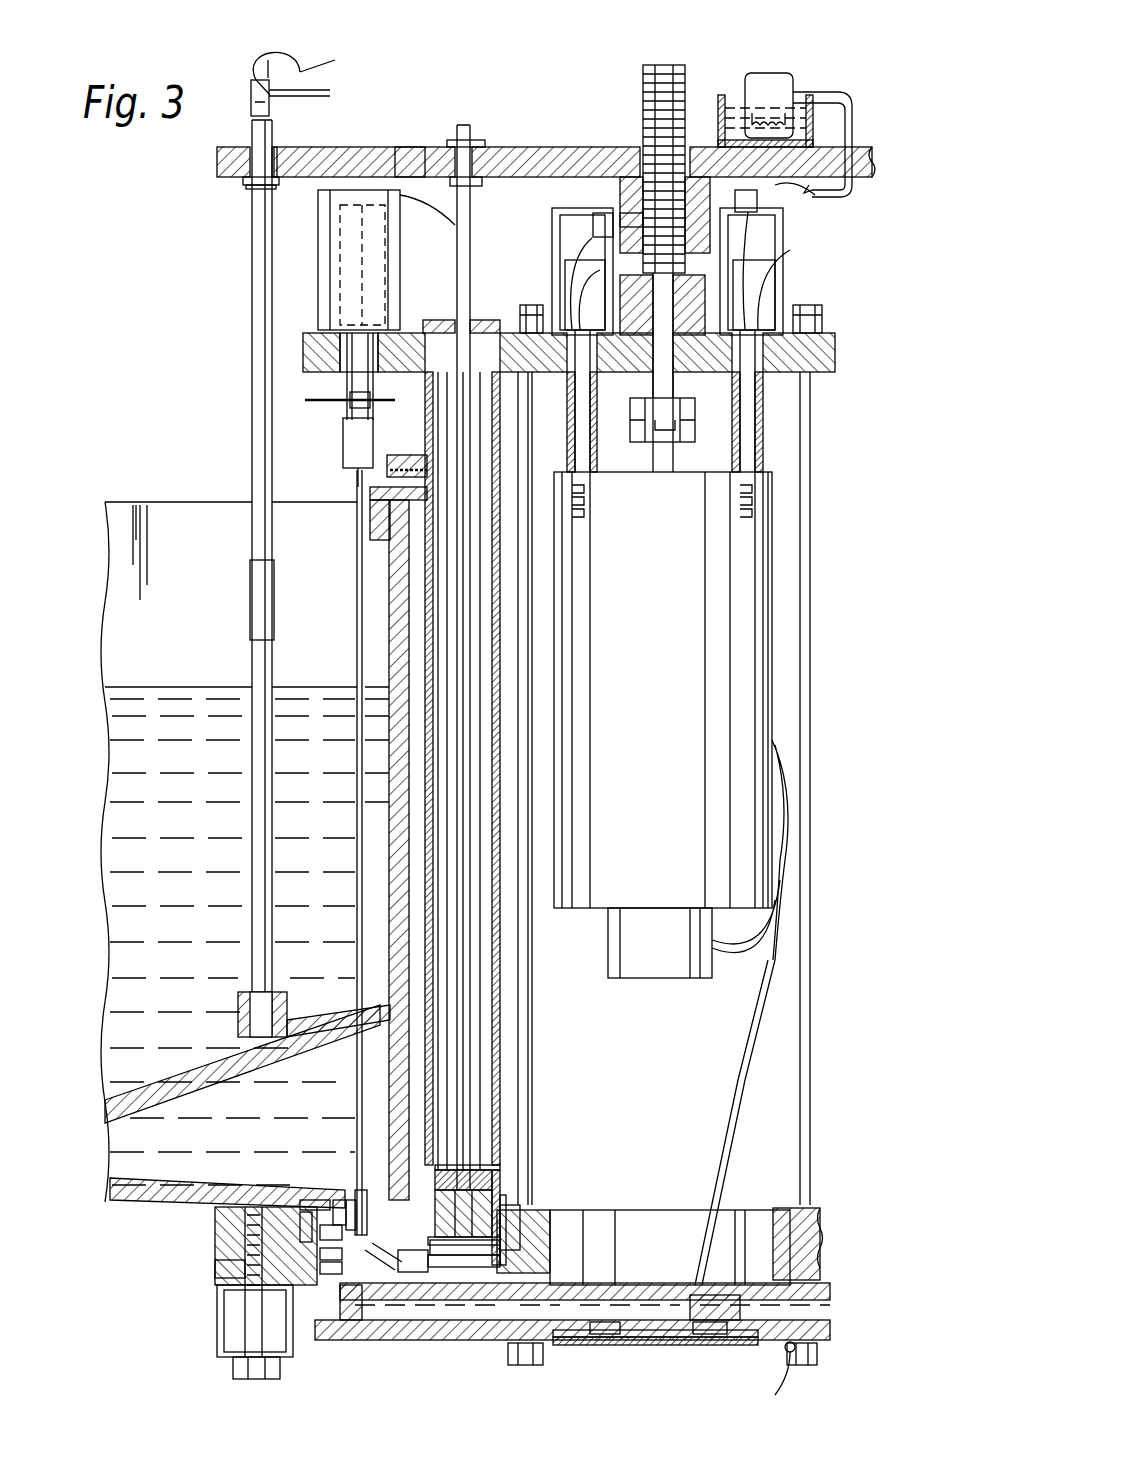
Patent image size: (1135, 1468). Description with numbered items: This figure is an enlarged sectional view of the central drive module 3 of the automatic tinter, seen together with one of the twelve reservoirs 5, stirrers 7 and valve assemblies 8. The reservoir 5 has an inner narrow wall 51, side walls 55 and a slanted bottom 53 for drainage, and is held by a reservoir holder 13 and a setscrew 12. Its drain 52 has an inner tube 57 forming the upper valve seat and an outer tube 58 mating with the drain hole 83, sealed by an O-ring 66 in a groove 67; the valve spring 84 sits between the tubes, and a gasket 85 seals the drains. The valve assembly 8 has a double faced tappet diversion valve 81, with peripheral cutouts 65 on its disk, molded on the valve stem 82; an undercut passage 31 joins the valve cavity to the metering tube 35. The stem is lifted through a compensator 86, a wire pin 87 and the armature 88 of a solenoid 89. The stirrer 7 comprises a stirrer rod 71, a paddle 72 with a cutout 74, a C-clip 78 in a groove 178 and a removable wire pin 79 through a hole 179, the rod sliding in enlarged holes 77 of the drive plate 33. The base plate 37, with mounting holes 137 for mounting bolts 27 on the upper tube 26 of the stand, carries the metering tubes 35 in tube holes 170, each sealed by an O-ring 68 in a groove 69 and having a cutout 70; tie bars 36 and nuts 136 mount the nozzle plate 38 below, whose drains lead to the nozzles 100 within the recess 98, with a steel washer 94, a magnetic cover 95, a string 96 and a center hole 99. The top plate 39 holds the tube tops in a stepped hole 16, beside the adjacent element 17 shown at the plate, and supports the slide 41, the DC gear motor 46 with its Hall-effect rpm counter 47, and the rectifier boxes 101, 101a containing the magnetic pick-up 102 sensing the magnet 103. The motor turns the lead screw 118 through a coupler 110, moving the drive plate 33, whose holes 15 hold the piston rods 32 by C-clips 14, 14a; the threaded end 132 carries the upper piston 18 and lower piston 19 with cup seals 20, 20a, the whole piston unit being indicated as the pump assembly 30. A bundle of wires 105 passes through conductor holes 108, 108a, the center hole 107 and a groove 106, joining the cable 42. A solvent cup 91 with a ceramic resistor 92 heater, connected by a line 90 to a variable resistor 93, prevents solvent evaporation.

The central drive module 3 is at (398, 118).
The reservoir 5 is at (183, 496).
The stirrer 7 is at (246, 598).
The valve assembly 8 is at (360, 1188).
The setscrew 12 is at (370, 492).
The reservoir holder 13 is at (410, 455).
The C-clip 14 is at (478, 180).
The C-clip 14a is at (475, 140).
The holes 15 is at (457, 150).
The stepped hole 16 is at (462, 320).
The spacer 17 is at (432, 320).
The upper piston 18 is at (503, 1168).
The lower piston 19 is at (472, 1182).
The cup seal 20 is at (492, 1212).
The cup seal 20a is at (500, 1192).
The upper tube 26 is at (217, 1320).
The mounting bolt 27 is at (233, 1368).
The pump cylinder assembly 30 is at (508, 1124).
The undercut passage 31 is at (432, 1300).
The piston rod 32 is at (487, 1047).
The drive plate 33 is at (217, 162).
The metering tube 35 is at (500, 942).
The tie bar 36 is at (532, 1012).
The base plate 37 is at (215, 1245).
The nozzle plate 38 is at (317, 1290).
The top plate 39 is at (303, 340).
The slide 41 is at (708, 300).
The cable 42 is at (748, 1078).
The DC gear motor 46 is at (688, 695).
The Hall-effect rpm counter 47 is at (662, 955).
The inner narrow wall 51 is at (390, 597).
The drain 52 is at (343, 1200).
The slanted bottom 53 is at (125, 1200).
The side wall 55 is at (205, 610).
The inner tube 57 is at (350, 1205).
The outer tube 58 is at (320, 1232).
The peripheral cutouts 65 is at (412, 1275).
The O-ring 66 is at (310, 1210).
The groove 67 is at (305, 1222).
The O-ring 68 is at (500, 1243).
The groove 69 is at (500, 1258).
The cutout 70 is at (455, 1262).
The stirrer rod 71 is at (252, 360).
The paddle 72 is at (130, 1110).
The cutout 74 is at (340, 1012).
The holes 77 is at (277, 150).
The C-clip 78 is at (245, 182).
The removable wire pin 79 is at (252, 72).
The tappet diversion valve 81 is at (355, 1320).
The valve stem 82 is at (357, 657).
The drain hole 83 is at (320, 1268).
The valve spring 84 is at (320, 1254).
The gasket 85 is at (388, 1275).
The compensator 86 is at (340, 440).
The wire pin 87 is at (330, 400).
The armature 88 is at (340, 282).
The solenoid 89 is at (318, 240).
The line 90 is at (852, 112).
The solvent cup 91 is at (720, 100).
The ceramic resistor 92 is at (772, 112).
The variable resistor 93 is at (815, 196).
The steel washer 94 is at (720, 1345).
The magnetic cover 95 is at (642, 1345).
The string 96 is at (790, 1352).
The recess 98 is at (660, 1337).
The center hole 99 is at (705, 1283).
The nozzle 100 is at (605, 1334).
The rectifier box 101 is at (552, 265).
The rectifier box 101a is at (783, 290).
The magnetic pick-up 102 is at (603, 213).
The magnet 103 is at (640, 180).
The bundle of wires 105 is at (790, 820).
The groove 106 is at (740, 1282).
The center hole 107 is at (782, 1215).
The conductor hole 108 is at (652, 375).
The conductor hole 108a is at (674, 376).
The coupler 110 is at (695, 435).
The lead screw 118 is at (645, 95).
The threaded end 132 is at (506, 1225).
The nut 136 is at (520, 318).
The mounting hole 137 is at (215, 1270).
The tube hole 170 is at (552, 1240).
The groove 178 is at (258, 188).
The hole 179 is at (251, 97).